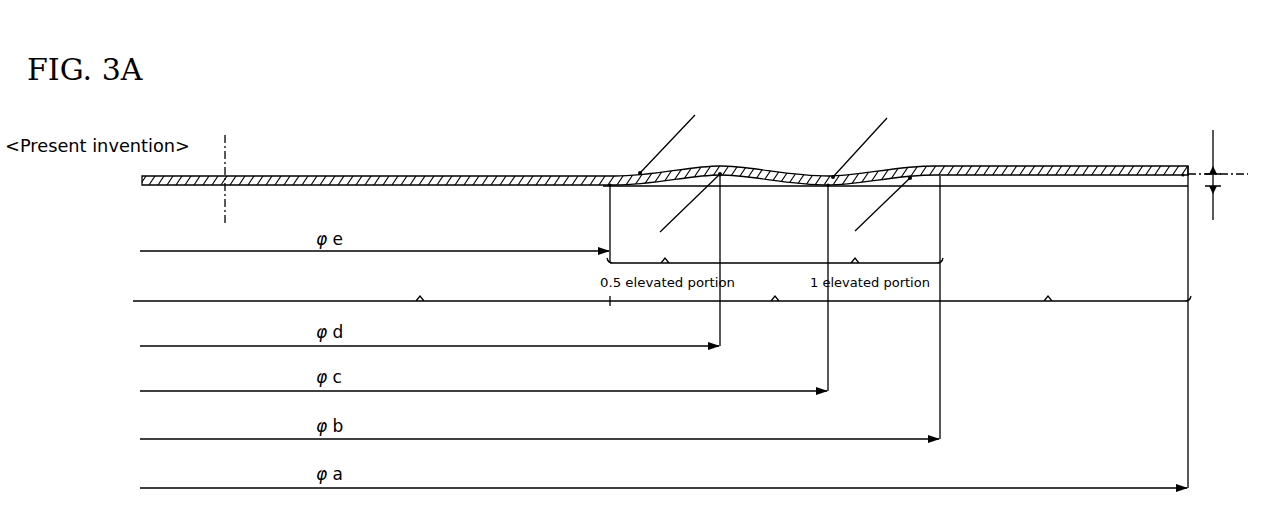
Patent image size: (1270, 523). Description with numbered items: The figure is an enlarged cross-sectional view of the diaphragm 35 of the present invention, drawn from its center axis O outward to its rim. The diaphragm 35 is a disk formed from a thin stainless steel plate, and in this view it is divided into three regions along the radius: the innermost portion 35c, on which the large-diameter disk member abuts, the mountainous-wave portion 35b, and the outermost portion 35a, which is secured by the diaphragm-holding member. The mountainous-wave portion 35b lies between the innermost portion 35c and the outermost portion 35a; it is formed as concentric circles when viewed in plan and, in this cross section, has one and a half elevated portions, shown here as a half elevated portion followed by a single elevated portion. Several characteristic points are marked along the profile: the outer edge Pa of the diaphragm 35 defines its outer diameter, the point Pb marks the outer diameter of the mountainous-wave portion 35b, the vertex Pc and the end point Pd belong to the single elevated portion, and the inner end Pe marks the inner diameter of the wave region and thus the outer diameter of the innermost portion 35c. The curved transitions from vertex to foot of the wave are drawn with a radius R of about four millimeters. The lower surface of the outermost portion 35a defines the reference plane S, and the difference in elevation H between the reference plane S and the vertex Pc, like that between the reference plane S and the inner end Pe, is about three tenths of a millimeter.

The diaphragm 35 is at (1053, 166).
The outermost portion 35a is at (1065, 322).
The mountainous-wave portion 35b is at (775, 333).
The innermost portion 35c is at (371, 312).
The outer diameter point Pa is at (1183, 176).
The outer diameter point of mountainous-wave portion Pb is at (944, 177).
The vertex of single elevated portion Pc is at (827, 187).
The end point of single elevated portion Pd is at (723, 176).
The inner end of mountainous-wave portion Pe is at (607, 186).
The radius R is at (775, 170).
The center axis O is at (224, 172).
The reference plane S is at (1224, 175).
The difference in elevation H is at (1215, 180).